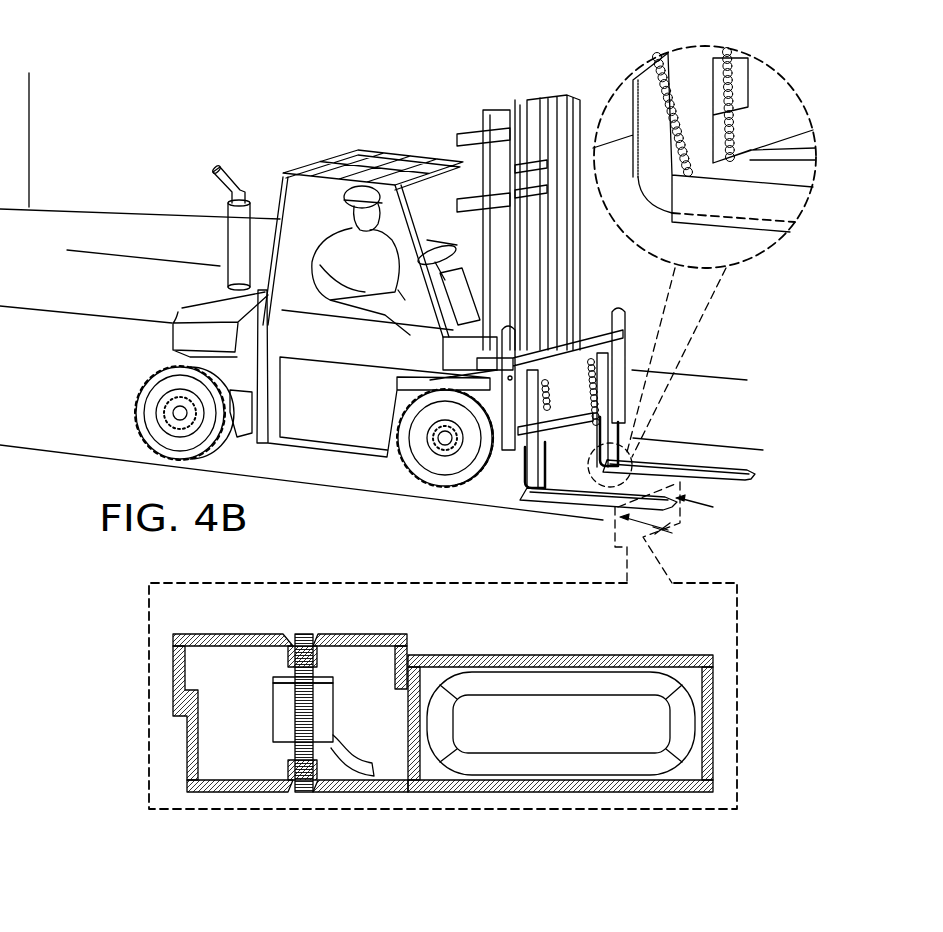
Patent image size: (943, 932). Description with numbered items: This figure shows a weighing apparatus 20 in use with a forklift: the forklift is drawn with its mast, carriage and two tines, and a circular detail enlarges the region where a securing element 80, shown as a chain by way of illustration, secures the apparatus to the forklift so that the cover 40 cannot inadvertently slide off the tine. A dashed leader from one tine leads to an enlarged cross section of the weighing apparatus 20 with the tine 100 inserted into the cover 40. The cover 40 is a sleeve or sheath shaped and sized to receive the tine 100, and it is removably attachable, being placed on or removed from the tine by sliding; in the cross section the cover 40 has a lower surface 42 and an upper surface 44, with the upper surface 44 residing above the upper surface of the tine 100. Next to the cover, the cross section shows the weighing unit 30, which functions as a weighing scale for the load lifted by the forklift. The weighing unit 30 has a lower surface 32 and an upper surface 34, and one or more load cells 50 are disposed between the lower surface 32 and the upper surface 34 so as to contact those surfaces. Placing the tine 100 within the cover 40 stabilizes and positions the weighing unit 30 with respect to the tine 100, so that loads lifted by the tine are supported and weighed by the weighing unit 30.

The securing element 80 is at (732, 72).
The weighing apparatus 20 is at (110, 640).
The weighing unit 30 is at (242, 794).
The lower surface 32 is at (273, 792).
The upper surface 34 is at (242, 634).
The load cell 50 is at (265, 779).
The cover 40 is at (508, 793).
The lower surface 42 is at (630, 792).
The upper surface 44 is at (673, 655).
The tine 100 is at (576, 736).